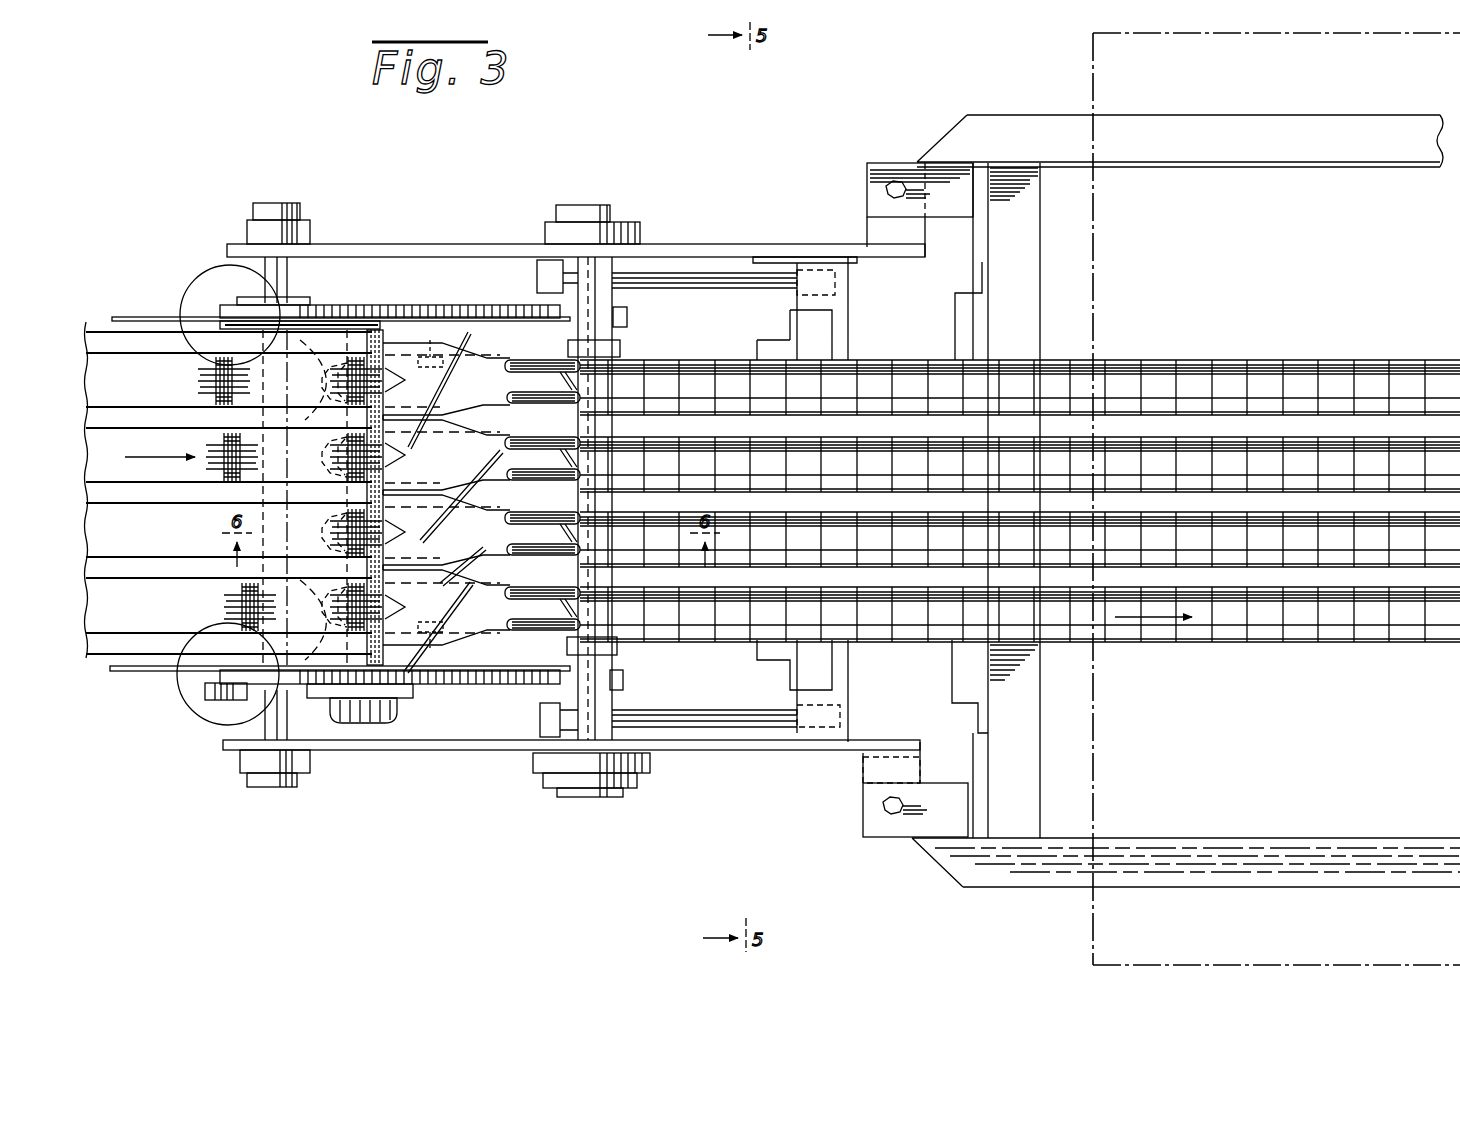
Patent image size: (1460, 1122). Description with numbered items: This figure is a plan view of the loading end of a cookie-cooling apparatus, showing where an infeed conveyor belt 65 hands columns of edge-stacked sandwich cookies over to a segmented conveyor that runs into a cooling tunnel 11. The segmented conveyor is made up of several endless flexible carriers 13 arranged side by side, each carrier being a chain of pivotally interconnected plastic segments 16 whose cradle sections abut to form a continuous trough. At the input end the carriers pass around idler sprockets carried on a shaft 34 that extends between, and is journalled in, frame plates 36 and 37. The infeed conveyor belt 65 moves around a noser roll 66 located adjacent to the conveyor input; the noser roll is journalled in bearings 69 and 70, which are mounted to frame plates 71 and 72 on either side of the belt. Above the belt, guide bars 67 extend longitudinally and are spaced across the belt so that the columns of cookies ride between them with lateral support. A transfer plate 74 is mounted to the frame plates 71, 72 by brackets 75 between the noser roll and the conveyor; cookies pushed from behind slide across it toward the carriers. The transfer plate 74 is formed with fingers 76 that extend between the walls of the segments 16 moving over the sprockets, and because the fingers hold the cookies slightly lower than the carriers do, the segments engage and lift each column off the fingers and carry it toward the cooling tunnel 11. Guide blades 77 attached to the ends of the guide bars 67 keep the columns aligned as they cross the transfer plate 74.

The cooling tunnel 11 is at (1082, 935).
The endless flexible carrier 13 is at (1258, 345).
The plastic segment 16 is at (1370, 462).
The shaft 34 is at (608, 280).
The frame plate 36 is at (257, 246).
The frame plate 37 is at (380, 748).
The infeed conveyor belt 65 is at (133, 372).
The noser roll 66 is at (352, 322).
The guide bar 67 is at (160, 583).
The bearing 69 is at (378, 328).
The bearing 70 is at (355, 718).
The frame plate 71 is at (132, 317).
The frame plate 72 is at (148, 672).
The transfer plate 74 is at (425, 375).
The bracket 75 is at (428, 357).
The finger 76 is at (637, 432).
The guide blade 77 is at (455, 338).